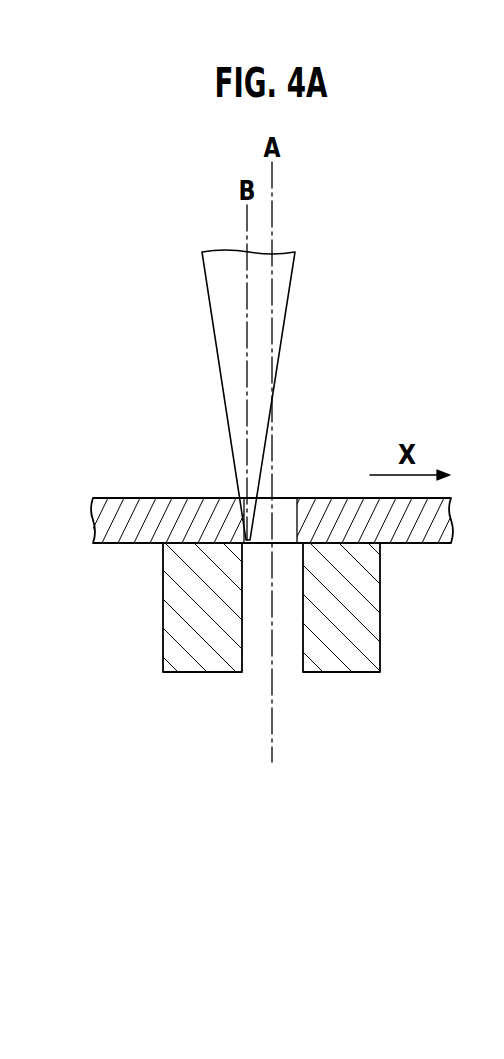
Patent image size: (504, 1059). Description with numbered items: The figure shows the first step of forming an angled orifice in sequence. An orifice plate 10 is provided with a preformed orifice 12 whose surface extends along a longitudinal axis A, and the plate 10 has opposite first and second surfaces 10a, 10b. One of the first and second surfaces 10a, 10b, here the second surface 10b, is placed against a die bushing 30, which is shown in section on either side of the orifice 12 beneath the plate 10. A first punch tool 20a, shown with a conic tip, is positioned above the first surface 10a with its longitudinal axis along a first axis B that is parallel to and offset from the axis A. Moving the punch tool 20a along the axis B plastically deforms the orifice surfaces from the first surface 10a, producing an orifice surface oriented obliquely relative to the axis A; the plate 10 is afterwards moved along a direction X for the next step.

The orifice plate 10 is at (148, 515).
The first surface 10a is at (188, 498).
The second surface 10b is at (133, 545).
The orifice 12 is at (277, 510).
The first punch tool 20a is at (228, 315).
The die bushing 30 is at (175, 640).